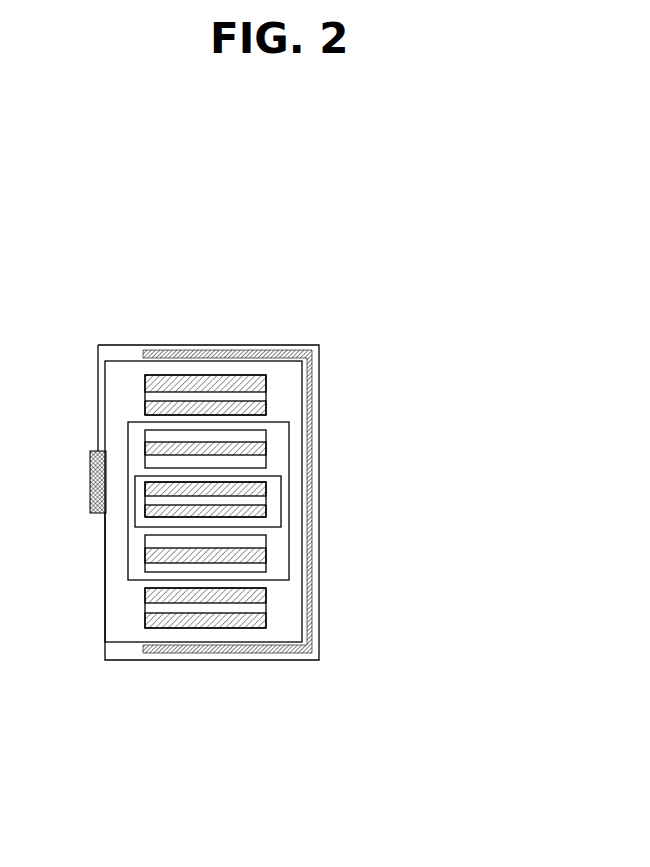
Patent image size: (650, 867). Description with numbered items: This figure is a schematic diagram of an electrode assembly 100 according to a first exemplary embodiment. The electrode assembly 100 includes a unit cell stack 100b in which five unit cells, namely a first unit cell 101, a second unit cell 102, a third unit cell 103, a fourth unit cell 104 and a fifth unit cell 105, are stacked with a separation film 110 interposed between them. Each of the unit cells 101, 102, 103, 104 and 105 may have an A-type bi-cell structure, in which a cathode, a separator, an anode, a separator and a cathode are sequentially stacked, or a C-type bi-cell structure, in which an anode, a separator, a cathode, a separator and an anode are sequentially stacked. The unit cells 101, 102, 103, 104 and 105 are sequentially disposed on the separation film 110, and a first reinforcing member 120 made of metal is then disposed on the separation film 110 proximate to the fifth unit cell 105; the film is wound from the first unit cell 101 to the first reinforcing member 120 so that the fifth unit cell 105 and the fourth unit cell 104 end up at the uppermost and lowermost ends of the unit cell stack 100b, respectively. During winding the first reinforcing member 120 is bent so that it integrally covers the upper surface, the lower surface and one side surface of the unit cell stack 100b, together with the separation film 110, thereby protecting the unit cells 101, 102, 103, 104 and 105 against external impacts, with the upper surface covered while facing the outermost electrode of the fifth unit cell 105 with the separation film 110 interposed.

The electrode assembly 100 is at (76, 318).
The unit cell stack 100b is at (445, 410).
The first unit cell 101 is at (266, 500).
The second unit cell 102 is at (266, 553).
The third unit cell 103 is at (266, 447).
The fourth unit cell 104 is at (266, 608).
The fifth unit cell 105 is at (266, 397).
The separation film 110 is at (122, 660).
The first reinforcing member 120 is at (262, 353).